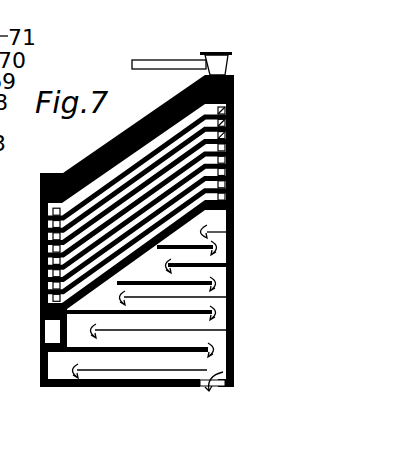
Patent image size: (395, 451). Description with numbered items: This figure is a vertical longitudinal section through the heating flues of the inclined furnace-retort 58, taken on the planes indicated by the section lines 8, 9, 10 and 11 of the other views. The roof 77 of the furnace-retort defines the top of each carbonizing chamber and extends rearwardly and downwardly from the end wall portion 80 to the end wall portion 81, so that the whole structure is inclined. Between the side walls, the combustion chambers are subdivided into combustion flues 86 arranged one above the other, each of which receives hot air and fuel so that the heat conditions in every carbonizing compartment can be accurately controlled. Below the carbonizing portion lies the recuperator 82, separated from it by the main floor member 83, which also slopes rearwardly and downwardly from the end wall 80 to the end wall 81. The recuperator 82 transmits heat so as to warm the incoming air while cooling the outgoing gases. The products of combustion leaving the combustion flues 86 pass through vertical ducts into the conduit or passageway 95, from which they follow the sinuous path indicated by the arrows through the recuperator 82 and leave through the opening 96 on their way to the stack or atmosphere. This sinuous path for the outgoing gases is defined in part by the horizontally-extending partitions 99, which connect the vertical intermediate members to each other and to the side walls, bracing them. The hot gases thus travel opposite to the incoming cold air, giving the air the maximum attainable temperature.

The section line of Figure 8 is at (233, 160).
The section line of Figure 9 is at (220, 72).
The section line of Figure 10 is at (53, 170).
The section line of Figure 11 is at (112, 127).
The inclined furnace-retort 58 is at (237, 226).
The roof 77 is at (165, 109).
The end wall portion 80 is at (237, 287).
The end wall portion 81 is at (40, 220).
The recuperator 82 is at (182, 306).
The main floor member 83 is at (181, 265).
The combustion flues 86 is at (222, 136).
The conduit or passageway 95 is at (232, 212).
The opening 96 is at (222, 390).
The horizontally-extending partitions 99 is at (182, 333).